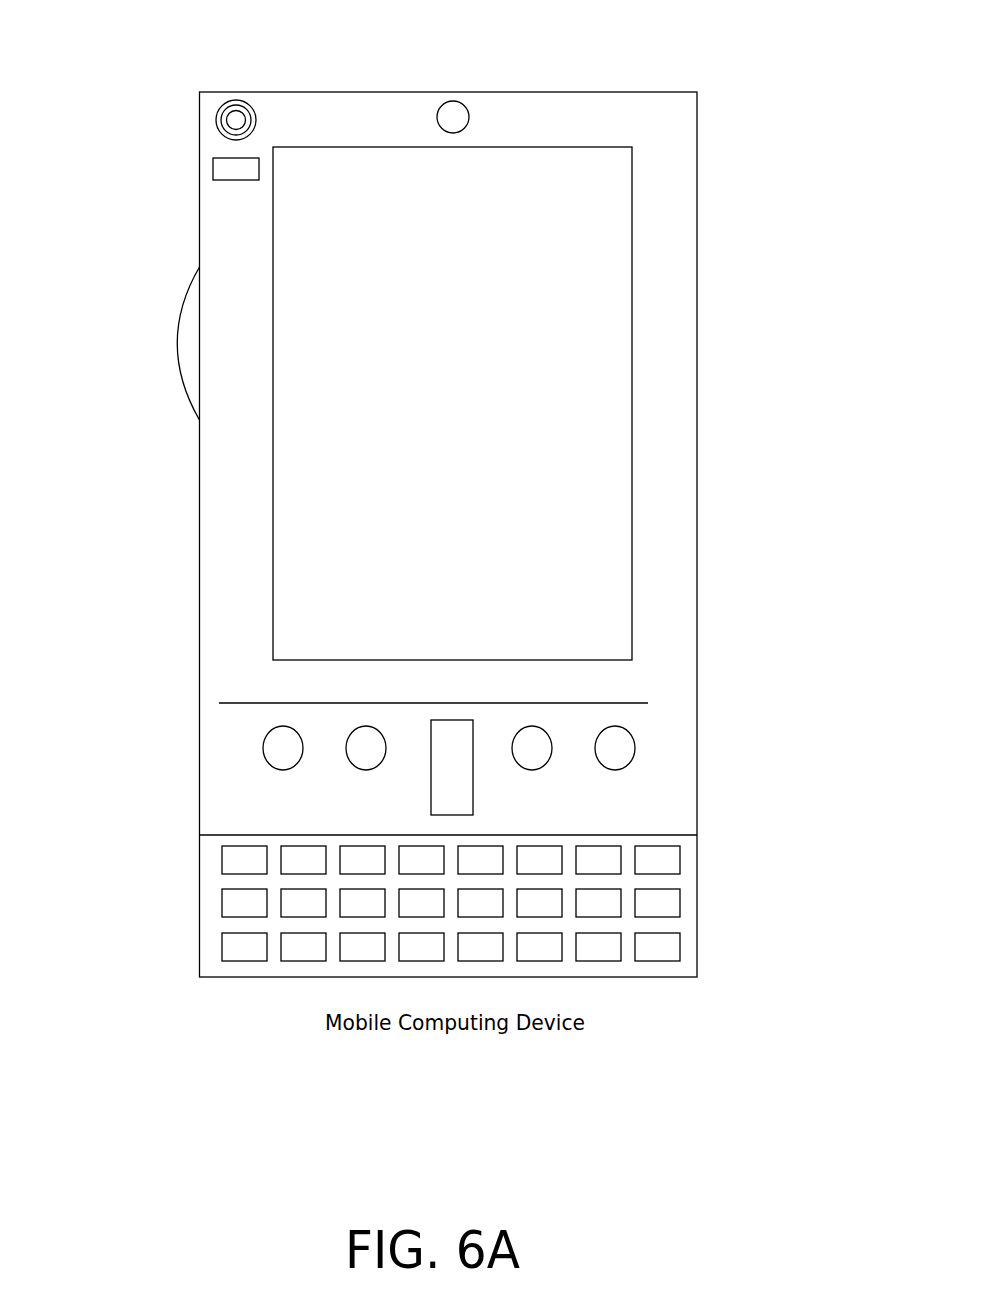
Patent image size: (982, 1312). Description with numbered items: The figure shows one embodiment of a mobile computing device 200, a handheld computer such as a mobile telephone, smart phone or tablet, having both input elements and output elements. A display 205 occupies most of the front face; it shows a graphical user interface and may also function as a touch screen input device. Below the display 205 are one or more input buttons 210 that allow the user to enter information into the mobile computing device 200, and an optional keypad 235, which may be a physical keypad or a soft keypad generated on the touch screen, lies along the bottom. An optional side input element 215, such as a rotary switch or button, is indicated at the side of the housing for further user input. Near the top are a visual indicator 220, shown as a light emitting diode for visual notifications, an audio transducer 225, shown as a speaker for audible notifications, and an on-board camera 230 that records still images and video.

The mobile computing device 200 is at (685, 112).
The display 205 is at (385, 572).
The input buttons 210 is at (452, 773).
The side input element 215 is at (190, 342).
The visual indicator 220 is at (213, 173).
The audio transducer 225 is at (216, 120).
The on-board camera 230 is at (466, 114).
The keypad 235 is at (208, 952).